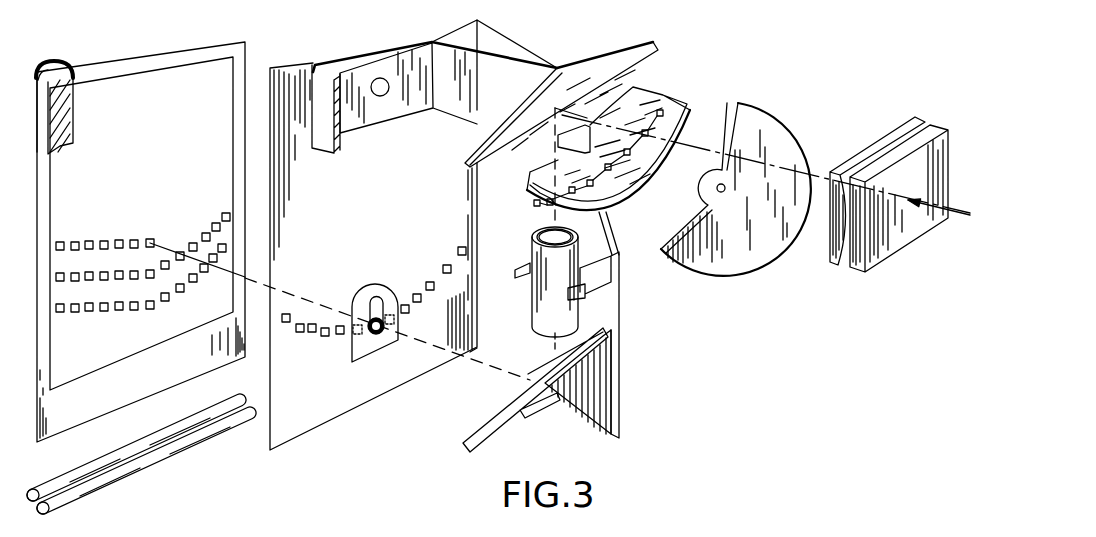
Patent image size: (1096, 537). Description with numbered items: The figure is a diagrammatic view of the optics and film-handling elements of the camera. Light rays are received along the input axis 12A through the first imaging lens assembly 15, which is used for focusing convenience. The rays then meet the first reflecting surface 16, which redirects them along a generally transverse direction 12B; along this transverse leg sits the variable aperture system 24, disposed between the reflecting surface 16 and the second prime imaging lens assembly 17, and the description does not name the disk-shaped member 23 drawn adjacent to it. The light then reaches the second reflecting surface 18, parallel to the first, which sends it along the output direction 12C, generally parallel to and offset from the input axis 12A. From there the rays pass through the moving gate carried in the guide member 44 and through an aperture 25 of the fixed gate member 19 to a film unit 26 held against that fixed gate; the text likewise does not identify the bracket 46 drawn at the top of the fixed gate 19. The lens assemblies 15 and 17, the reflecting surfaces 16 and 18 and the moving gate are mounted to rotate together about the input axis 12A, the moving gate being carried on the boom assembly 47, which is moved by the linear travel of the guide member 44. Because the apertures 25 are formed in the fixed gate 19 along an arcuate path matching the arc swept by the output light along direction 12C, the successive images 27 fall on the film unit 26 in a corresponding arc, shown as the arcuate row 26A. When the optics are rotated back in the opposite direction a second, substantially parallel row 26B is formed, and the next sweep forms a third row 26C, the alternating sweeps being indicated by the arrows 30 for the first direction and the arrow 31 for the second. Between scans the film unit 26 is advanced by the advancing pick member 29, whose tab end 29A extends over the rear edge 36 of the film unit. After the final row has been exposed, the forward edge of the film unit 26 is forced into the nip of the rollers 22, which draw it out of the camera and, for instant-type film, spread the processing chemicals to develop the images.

The input axis 12A is at (922, 211).
The transverse direction 12B is at (552, 158).
The output direction 12C is at (473, 363).
The first imaging lens assembly 15 is at (865, 133).
The reflecting surface 16 is at (654, 52).
The second prime imaging lens assembly 17 is at (528, 251).
The reflecting surface 18 is at (470, 431).
The fixed gate member 19 is at (338, 416).
The rollers 22 is at (178, 468).
The shutter disk 23 is at (754, 122).
The variable aperture system 24 is at (680, 94).
The apertures 25 is at (431, 284).
The film unit 26 is at (248, 62).
The arcuate row 26A is at (75, 314).
The arcuate row 26B is at (136, 284).
The arcuate row 26C is at (75, 241).
The images 27 is at (120, 241).
The advancing pick member 29 is at (56, 62).
The tab end 29A is at (74, 74).
The arrows 30 is at (194, 219).
The arrow 31 is at (206, 249).
The rear edge 36 is at (148, 58).
The moving gate guide member 44 is at (357, 359).
The channel bracket 46 is at (382, 78).
The boom assembly 47 is at (627, 335).